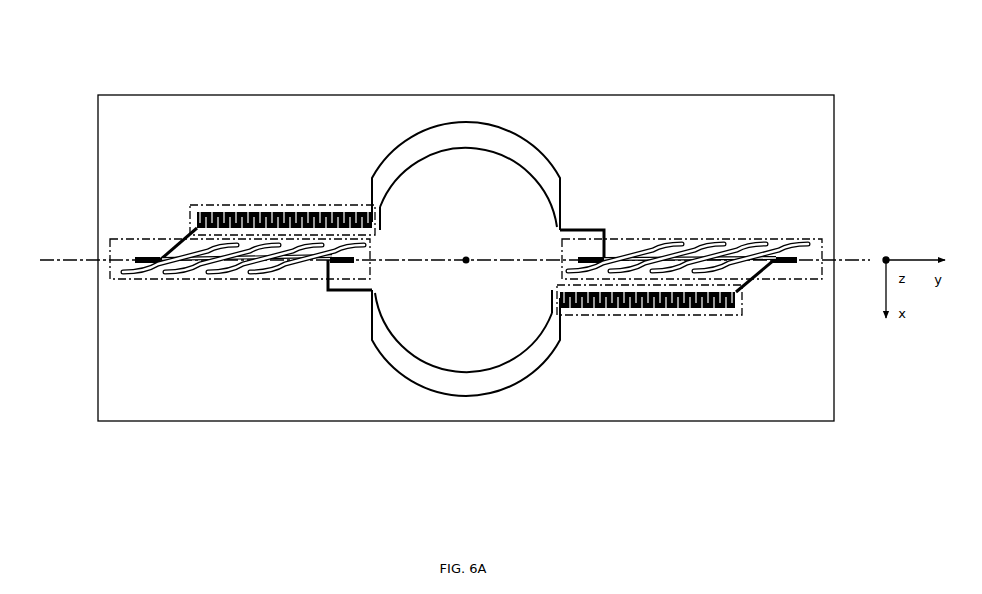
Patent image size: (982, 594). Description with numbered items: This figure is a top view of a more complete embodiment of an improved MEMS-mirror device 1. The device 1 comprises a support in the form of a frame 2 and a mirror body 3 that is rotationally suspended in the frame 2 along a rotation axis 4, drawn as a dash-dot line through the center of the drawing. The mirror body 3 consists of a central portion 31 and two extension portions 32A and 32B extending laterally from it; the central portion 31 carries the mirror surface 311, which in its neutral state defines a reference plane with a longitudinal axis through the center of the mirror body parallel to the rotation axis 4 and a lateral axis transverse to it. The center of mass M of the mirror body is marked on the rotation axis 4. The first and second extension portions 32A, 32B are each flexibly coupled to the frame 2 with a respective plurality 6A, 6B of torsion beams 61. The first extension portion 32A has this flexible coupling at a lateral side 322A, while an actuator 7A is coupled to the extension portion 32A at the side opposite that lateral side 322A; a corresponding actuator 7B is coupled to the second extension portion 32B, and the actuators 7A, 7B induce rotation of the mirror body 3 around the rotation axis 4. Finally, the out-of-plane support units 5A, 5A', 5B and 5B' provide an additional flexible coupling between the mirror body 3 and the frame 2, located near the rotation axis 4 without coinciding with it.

The MEMS-mirror device 1 is at (92, 465).
The frame 2 is at (142, 121).
The mirror body 3 is at (574, 334).
The central portion 31 is at (509, 180).
The mirror surface 311 is at (425, 322).
The first extension portion 32A is at (352, 237).
The second extension portion 32B is at (580, 283).
The lateral side 322A is at (264, 243).
The rotation axis 4 is at (75, 266).
The out-of-plane support unit 5A is at (178, 150).
The out-of-plane support unit 5A' is at (338, 160).
The out-of-plane support unit 5B is at (753, 369).
The out-of-plane support unit 5B' is at (604, 159).
The plurality of torsion beams 6A is at (307, 281).
The plurality of torsion beams 6B is at (621, 236).
The torsion beam 61 is at (152, 276).
The actuator 7A is at (247, 203).
The actuator 7B is at (688, 317).
The center of mass M is at (466, 278).